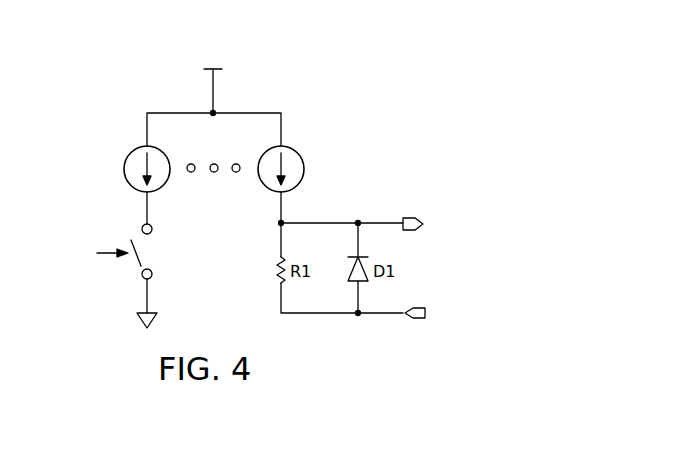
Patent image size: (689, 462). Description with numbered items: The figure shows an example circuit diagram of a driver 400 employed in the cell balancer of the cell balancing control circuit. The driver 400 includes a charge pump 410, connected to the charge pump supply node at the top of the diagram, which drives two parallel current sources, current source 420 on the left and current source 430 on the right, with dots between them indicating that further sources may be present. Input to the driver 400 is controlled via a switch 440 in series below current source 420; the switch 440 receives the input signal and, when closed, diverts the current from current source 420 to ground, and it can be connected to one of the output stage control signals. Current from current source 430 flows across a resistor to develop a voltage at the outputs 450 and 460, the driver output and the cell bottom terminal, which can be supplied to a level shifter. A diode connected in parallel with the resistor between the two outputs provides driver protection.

The driver 400 is at (392, 90).
The charge pump 410 is at (211, 92).
The current source 420 is at (126, 172).
The current source 430 is at (304, 173).
The switch 440 is at (150, 256).
The output 450 is at (408, 217).
The output 460 is at (418, 320).